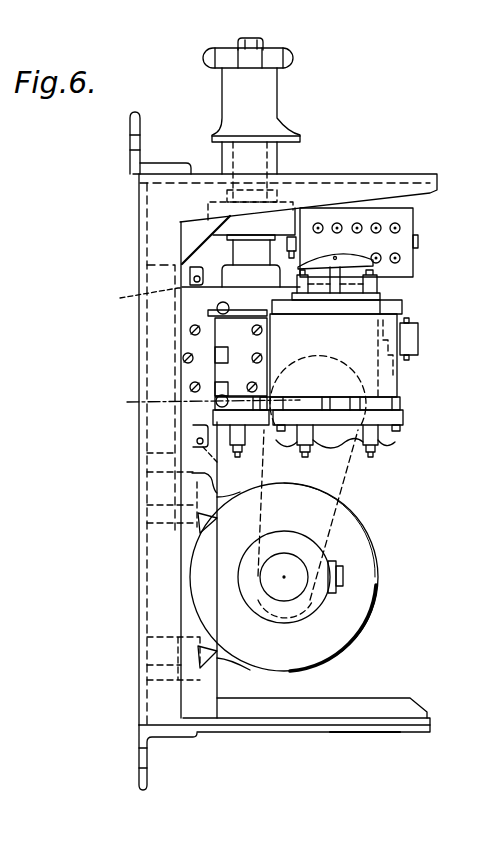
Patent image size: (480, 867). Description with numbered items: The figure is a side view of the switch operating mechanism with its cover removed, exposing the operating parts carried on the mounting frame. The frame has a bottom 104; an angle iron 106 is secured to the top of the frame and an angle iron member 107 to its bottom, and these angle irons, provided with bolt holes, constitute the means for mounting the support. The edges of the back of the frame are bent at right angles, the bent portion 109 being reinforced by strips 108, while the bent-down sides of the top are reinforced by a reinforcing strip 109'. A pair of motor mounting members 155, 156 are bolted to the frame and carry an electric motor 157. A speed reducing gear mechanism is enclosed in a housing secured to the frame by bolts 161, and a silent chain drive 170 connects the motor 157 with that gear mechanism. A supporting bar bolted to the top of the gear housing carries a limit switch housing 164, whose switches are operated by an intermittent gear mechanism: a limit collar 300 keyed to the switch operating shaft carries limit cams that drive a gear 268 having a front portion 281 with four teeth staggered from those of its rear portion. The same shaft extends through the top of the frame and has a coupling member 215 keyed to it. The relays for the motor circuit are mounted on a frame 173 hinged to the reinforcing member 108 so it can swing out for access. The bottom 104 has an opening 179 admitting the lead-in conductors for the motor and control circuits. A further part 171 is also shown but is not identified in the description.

The limit collar 300 is at (283, 211).
The reinforcing strip 109' is at (301, 198).
The angle iron 106 is at (133, 157).
The gear 268 is at (286, 243).
The front portion of gear 281 is at (287, 253).
The limit switch housing 164 is at (400, 236).
The relay frame 173 is at (396, 374).
The coupling member 215 is at (414, 334).
The shaft 171 is at (198, 403).
The bent portion 109 is at (137, 449).
The motor mounting member 155 is at (147, 507).
The motor mounting member 156 is at (147, 665).
The bolts 161 is at (191, 275).
The reinforcing strip 108 is at (202, 690).
The silent chain drive 170 is at (345, 483).
The electric motor 157 is at (365, 581).
The bottom 104 is at (315, 732).
The opening 179 is at (372, 729).
The angle iron member 107 is at (143, 748).